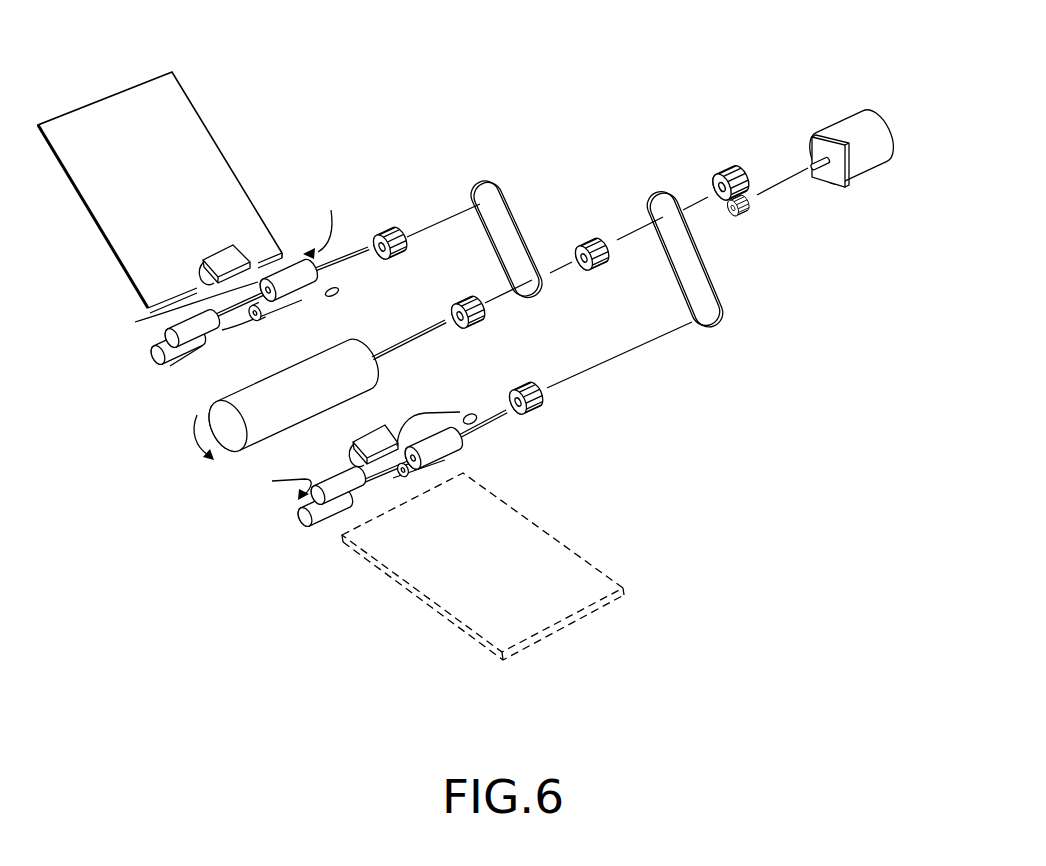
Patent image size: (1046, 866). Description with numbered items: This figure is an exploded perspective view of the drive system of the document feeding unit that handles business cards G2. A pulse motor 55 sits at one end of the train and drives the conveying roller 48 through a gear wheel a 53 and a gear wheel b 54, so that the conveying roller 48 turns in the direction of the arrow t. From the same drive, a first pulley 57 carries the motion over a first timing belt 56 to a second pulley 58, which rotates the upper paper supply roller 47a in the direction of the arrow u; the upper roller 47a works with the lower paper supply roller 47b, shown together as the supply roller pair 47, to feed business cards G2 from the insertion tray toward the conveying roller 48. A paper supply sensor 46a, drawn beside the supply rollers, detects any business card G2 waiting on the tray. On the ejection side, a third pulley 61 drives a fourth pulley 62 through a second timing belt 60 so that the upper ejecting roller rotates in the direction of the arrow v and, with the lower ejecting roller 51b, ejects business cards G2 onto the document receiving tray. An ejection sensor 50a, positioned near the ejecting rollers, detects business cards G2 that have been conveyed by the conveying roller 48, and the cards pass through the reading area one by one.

The business card G2 is at (165, 92).
The paper supply sensor 46a is at (222, 247).
The roller unit 47 is at (105, 375).
The upper paper supply roller 47a is at (167, 321).
The lower paper supply roller 47b is at (258, 323).
The conveying roller 48 is at (223, 452).
The ejection sensor 50a is at (503, 425).
The lower ejecting roller 51b is at (453, 467).
The gear wheel a 53 is at (748, 216).
The gear wheel b 54 is at (723, 168).
The pulse motor 55 is at (868, 112).
The first timing belt 56 is at (484, 190).
The first pulley 57 is at (483, 318).
The second pulley 58 is at (378, 230).
The second timing belt 60 is at (717, 323).
The third pulley 61 is at (588, 236).
The fourth pulley 62 is at (540, 403).
The arrow u is at (321, 219).
The arrow t is at (200, 432).
The arrow v is at (284, 482).